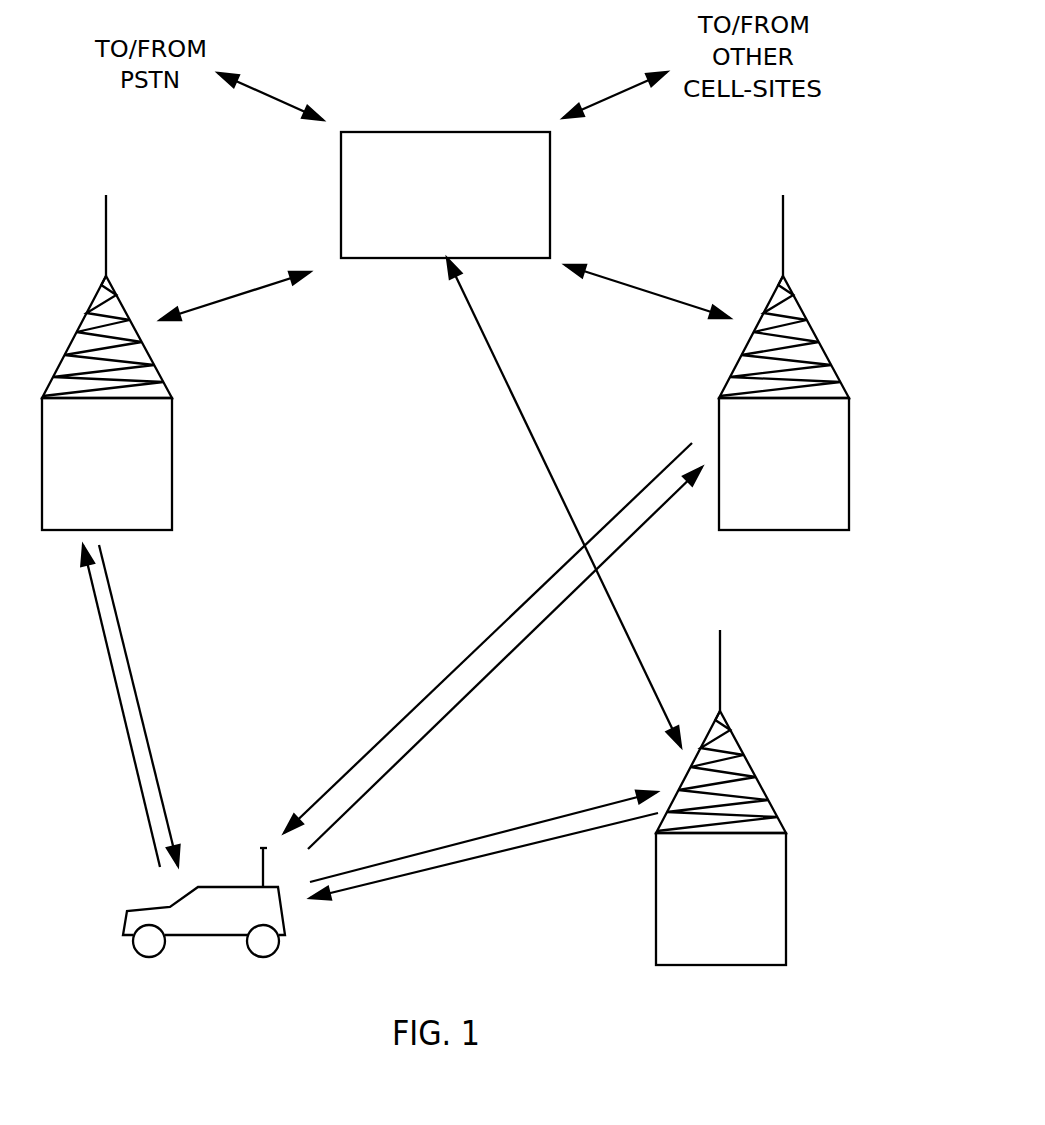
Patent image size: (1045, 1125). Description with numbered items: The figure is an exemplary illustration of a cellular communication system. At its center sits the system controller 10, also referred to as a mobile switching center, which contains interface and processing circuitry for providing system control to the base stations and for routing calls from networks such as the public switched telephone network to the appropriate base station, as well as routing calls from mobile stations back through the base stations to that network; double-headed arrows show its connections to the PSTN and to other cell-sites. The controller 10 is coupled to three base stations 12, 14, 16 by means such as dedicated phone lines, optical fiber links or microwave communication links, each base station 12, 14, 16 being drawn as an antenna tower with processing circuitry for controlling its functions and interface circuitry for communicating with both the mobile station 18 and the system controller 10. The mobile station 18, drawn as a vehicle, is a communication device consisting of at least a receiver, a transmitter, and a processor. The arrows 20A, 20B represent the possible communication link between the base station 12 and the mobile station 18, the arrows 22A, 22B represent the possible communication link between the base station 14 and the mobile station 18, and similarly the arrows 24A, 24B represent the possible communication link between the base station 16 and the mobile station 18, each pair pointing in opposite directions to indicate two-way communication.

The system controller 10 is at (463, 132).
The base station 12 is at (75, 333).
The base station 14 is at (817, 333).
The base station 16 is at (753, 770).
The mobile station 18 is at (150, 907).
The arrow 20A is at (122, 710).
The arrow 20B is at (142, 703).
The arrow 22A is at (476, 648).
The arrow 22B is at (492, 672).
The arrow 24A is at (495, 832).
The arrow 24B is at (515, 850).